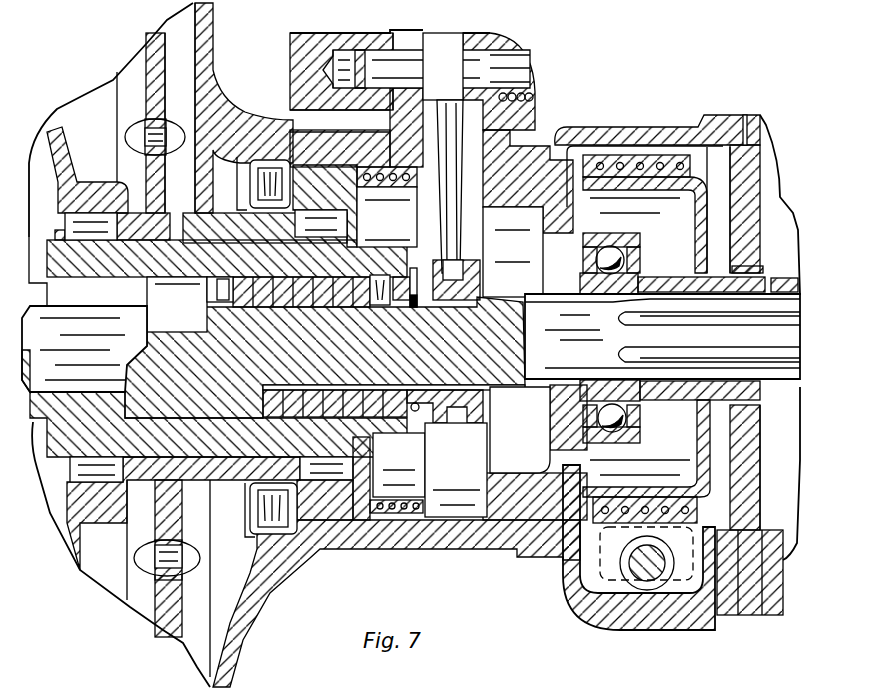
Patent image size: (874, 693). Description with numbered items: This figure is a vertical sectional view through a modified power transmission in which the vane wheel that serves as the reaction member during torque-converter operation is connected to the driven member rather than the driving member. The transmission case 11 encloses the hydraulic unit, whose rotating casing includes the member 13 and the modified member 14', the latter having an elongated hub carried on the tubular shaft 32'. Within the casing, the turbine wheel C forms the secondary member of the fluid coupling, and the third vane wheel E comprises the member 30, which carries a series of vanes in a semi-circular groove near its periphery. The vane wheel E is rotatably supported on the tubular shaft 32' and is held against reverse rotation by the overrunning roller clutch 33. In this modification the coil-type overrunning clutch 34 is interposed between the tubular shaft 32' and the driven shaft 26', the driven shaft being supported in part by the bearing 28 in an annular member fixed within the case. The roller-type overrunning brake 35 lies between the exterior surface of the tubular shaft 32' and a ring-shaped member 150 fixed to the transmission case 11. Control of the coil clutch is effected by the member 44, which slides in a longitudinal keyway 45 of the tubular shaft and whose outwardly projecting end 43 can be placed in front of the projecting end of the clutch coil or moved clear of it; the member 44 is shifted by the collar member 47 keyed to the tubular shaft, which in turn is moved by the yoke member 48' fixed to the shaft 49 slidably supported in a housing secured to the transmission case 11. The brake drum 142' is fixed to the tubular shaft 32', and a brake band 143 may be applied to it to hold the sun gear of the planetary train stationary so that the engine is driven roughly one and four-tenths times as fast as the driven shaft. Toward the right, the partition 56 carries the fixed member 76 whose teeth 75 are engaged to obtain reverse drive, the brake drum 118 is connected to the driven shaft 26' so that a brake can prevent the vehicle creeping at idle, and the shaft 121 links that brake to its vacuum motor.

The casing member 13 is at (156, 47).
The vane wheel E is at (188, 50).
The turbine wheel C is at (82, 110).
The member 30 is at (110, 118).
The yoke member 48' is at (456, 138).
The shaft 49 is at (512, 64).
The transmission case 11 is at (657, 128).
The ring-shaped member 150 is at (322, 165).
The overrunning brake 35 is at (360, 222).
The coil-type overrunning clutch 34 is at (382, 274).
The brake drum 118 is at (644, 213).
The bearing 28 is at (628, 262).
The teeth 75 is at (770, 262).
The tubular shaft 32' is at (84, 349).
The longitudinal keyway 45 is at (213, 289).
The outwardly projecting end 43 is at (212, 297).
The driven shaft 26' is at (655, 358).
The member 76 is at (768, 400).
The partition 56 is at (755, 494).
The collar member 47 is at (487, 430).
The member 44 is at (408, 468).
The brake drum 142' is at (456, 470).
The brake band 143 is at (403, 517).
The overrunning roller clutch 33 is at (105, 499).
The casing member 14' is at (190, 558).
The shaft 121 is at (632, 588).